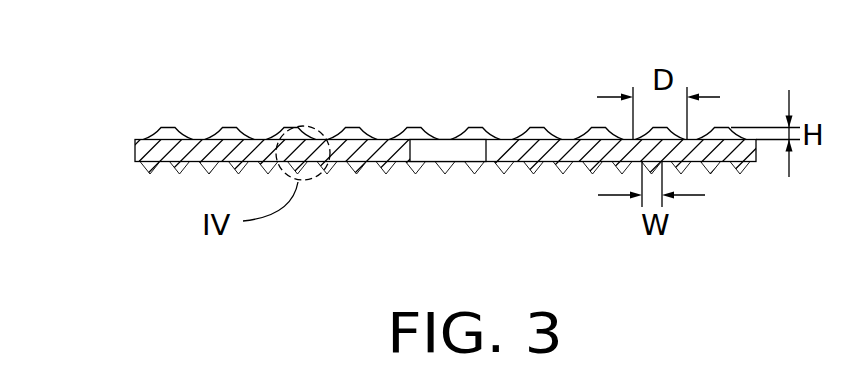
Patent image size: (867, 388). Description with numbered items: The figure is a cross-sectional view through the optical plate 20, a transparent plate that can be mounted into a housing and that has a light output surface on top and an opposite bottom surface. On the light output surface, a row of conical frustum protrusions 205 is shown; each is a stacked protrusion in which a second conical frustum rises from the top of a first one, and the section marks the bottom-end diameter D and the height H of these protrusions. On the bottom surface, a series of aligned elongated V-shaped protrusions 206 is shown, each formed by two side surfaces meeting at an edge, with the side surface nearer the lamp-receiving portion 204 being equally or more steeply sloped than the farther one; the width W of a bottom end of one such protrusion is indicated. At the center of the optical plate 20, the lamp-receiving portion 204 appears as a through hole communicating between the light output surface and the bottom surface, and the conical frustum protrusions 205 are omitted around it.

The optical plate 20 is at (138, 82).
The lamp-receiving portion 204 is at (443, 152).
The conical frustum protrusions 205 is at (600, 128).
The elongated V-shaped protrusions 206 is at (564, 168).